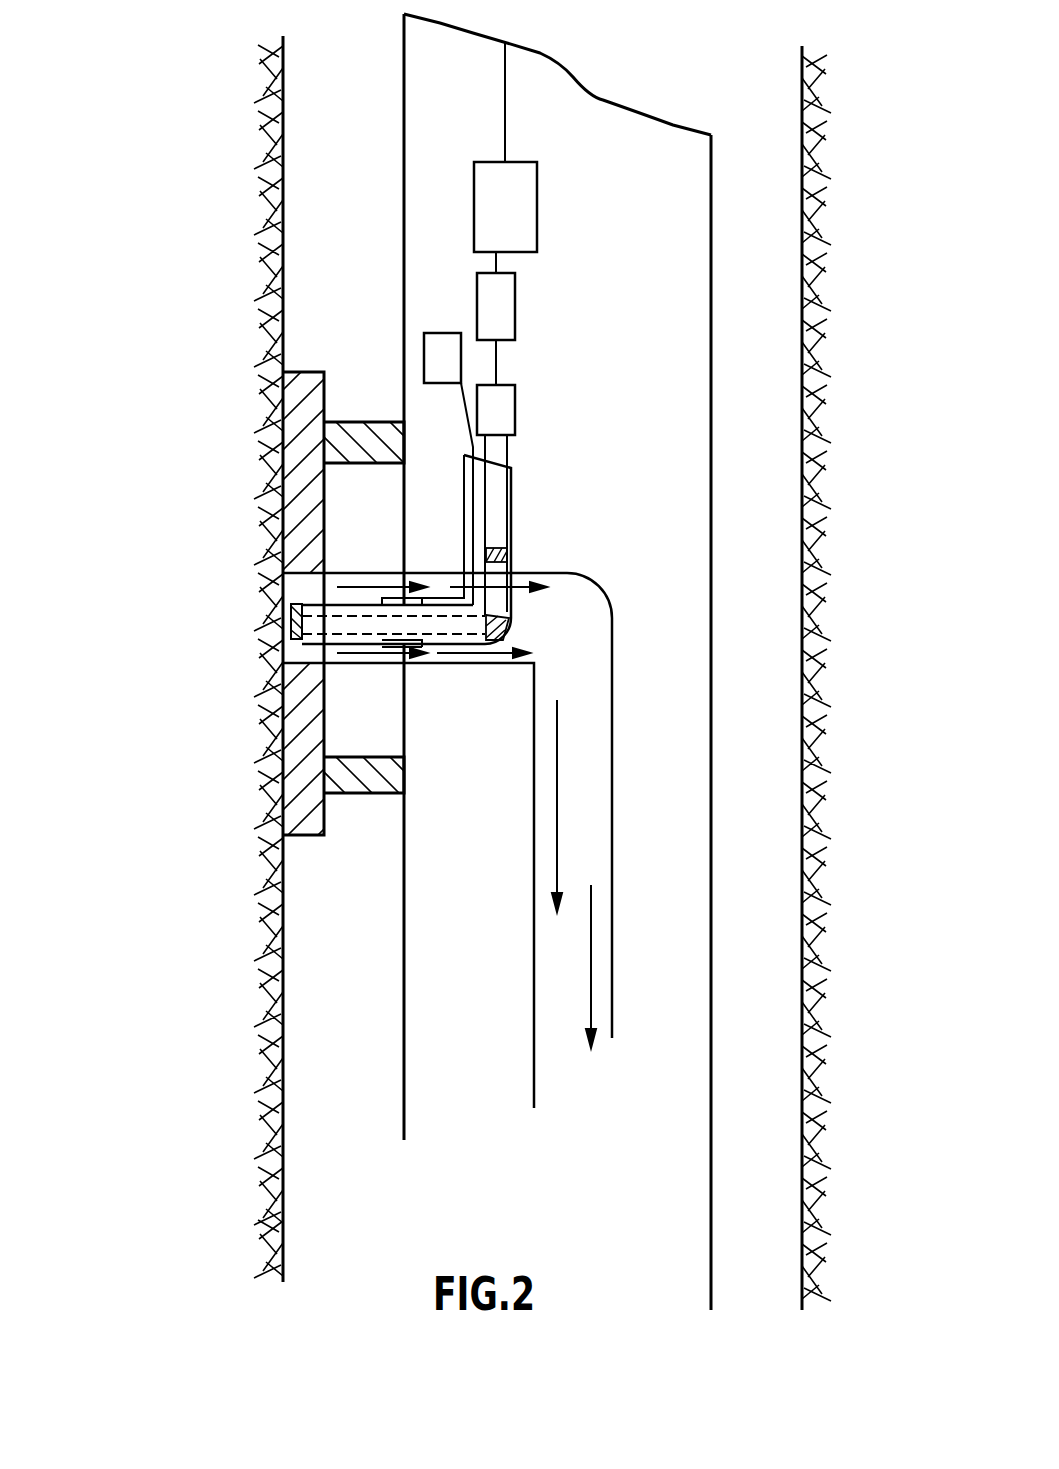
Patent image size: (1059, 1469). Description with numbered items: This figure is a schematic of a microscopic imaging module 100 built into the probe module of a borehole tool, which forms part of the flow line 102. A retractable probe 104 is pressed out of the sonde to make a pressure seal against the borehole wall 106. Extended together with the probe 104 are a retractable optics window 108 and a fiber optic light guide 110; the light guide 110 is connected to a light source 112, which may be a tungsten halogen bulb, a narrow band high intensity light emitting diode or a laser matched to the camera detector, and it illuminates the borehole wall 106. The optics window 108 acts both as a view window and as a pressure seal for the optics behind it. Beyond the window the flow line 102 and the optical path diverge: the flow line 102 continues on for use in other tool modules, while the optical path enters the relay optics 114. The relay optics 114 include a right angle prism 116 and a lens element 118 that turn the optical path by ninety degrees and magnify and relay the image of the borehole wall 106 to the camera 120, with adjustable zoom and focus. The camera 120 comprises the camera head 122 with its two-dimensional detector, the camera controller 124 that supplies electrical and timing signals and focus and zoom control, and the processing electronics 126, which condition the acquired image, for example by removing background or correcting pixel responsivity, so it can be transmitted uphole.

The microscopic imaging module 100 is at (630, 468).
The flow line 102 is at (573, 1070).
The retractable probe 104 is at (302, 667).
The borehole wall 106 is at (283, 231).
The retractable optics window 108 is at (291, 628).
The fiber optic light guide 110 is at (474, 512).
The light source 112 is at (443, 350).
The relay optics 114 is at (650, 660).
The right angle prism 116 is at (510, 618).
The lens element 118 is at (505, 553).
The camera 120 is at (578, 125).
The camera head 122 is at (498, 417).
The camera controller 124 is at (498, 300).
The processing electronics 126 is at (518, 213).